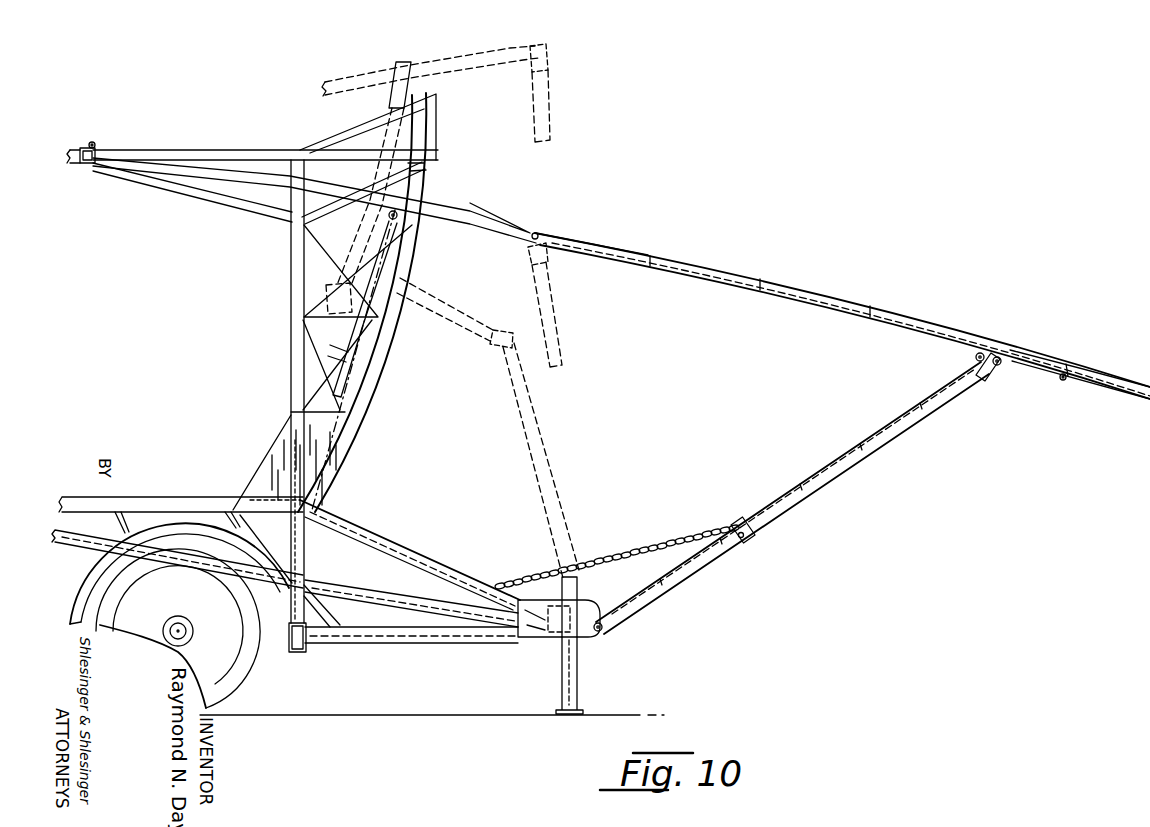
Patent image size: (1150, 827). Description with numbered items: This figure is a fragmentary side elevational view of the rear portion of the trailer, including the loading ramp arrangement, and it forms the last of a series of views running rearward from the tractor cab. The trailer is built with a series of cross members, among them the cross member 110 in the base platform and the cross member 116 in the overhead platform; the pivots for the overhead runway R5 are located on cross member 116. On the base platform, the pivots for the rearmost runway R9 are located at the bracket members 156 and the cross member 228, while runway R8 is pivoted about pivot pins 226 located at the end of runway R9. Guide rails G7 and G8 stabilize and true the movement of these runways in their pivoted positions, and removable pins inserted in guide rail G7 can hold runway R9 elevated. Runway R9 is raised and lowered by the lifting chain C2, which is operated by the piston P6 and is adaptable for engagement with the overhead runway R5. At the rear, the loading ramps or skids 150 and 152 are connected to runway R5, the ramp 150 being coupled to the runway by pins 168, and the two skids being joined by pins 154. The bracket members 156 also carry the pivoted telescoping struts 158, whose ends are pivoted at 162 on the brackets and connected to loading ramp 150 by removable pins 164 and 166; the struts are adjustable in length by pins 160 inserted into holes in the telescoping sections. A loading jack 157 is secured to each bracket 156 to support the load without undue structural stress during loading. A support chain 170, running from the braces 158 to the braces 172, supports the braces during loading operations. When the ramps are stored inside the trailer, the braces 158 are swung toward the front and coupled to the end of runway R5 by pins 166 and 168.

The cross member 110 is at (305, 657).
The cross member 116 is at (91, 144).
The loading ramp 150 is at (765, 282).
The loading ramp 152 is at (1108, 378).
The pin 154 is at (1061, 381).
The bracket member 156 is at (582, 640).
The loading jack 157 is at (578, 690).
The telescoping strut 158 is at (706, 561).
The pin 160 is at (750, 536).
The pivot 162 is at (599, 620).
The pin 164 is at (975, 360).
The pin 166 is at (990, 354).
The pin 168 is at (536, 233).
The support chain 170 is at (634, 545).
The brace 172 is at (424, 556).
The pivot pin 226 is at (288, 588).
The cross member 228 is at (553, 643).
The lifting chain C2 is at (396, 296).
The piston P6 is at (335, 354).
The guide rail G7 is at (312, 594).
The guide rail G8 is at (422, 177).
The runway R5 is at (461, 66).
The runway R8 is at (78, 533).
The runway R9 is at (384, 592).